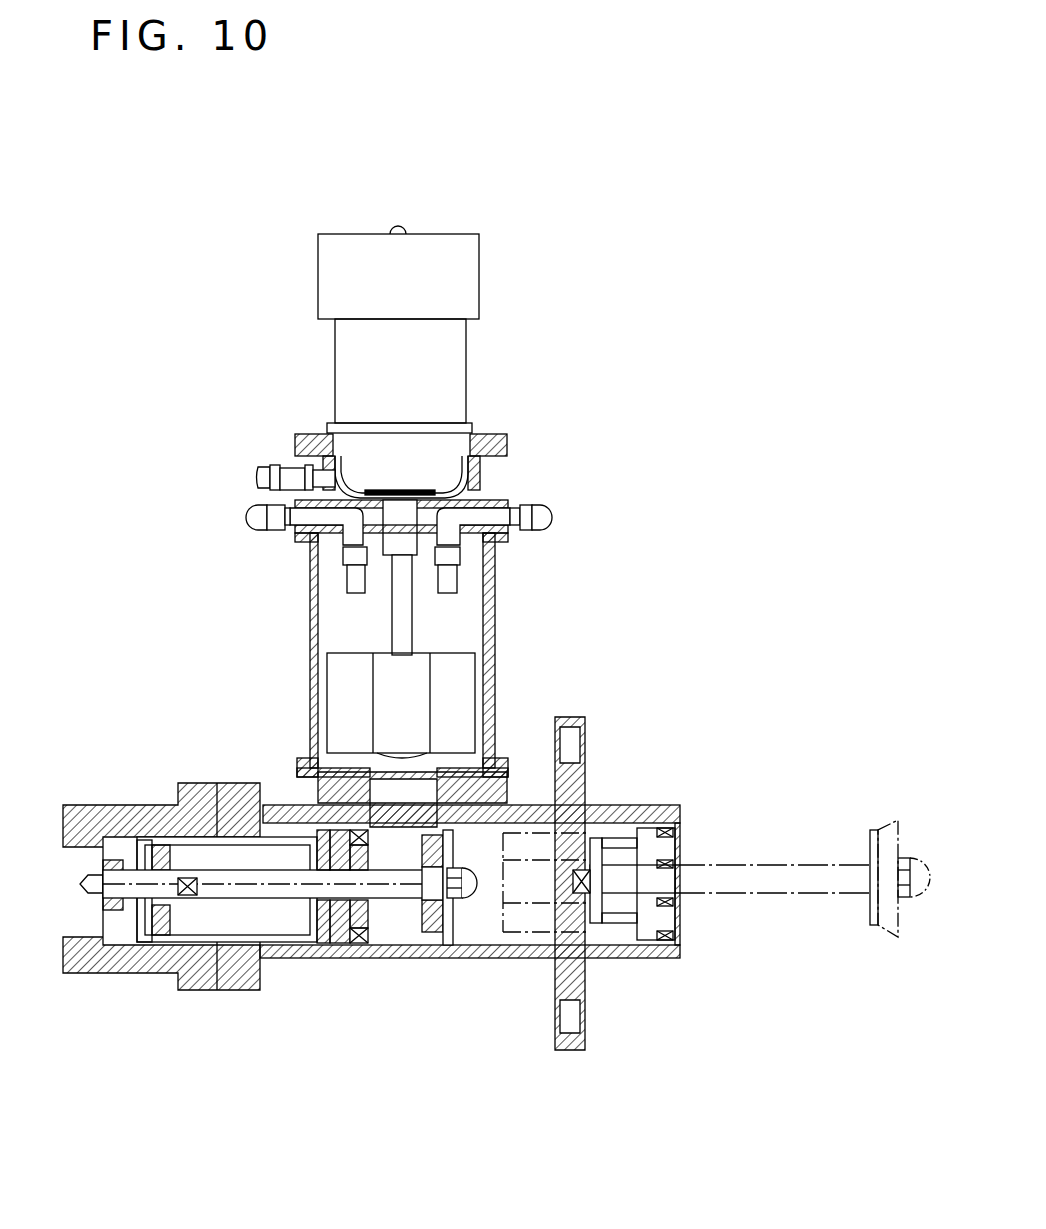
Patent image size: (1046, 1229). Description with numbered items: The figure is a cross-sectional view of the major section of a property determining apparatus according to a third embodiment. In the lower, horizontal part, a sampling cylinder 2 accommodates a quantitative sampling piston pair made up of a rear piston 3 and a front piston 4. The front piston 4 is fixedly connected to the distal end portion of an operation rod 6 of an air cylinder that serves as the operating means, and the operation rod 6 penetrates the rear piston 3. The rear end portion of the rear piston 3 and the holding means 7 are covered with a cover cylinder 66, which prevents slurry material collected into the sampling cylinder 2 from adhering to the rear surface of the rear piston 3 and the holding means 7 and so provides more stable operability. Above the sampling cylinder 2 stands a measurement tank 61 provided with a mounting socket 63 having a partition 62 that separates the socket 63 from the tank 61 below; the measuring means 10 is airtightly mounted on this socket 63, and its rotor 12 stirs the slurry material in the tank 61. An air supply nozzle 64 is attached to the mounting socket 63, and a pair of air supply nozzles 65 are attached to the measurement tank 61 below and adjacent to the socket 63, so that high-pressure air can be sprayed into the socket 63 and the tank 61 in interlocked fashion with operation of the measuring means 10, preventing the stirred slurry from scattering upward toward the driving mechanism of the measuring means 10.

The sampling cylinder 2 is at (507, 958).
The rear piston 3 is at (390, 957).
The front piston 4 is at (420, 957).
The operation rod 6 is at (270, 872).
The holding means 7 is at (183, 913).
The measuring means 10 is at (467, 350).
The rotor 12 is at (462, 677).
The measurement tank 61 is at (495, 607).
The partition 62 is at (473, 486).
The mounting socket 63 is at (480, 467).
The air supply nozzle 64 is at (282, 470).
The air supply nozzle 65 is at (258, 528).
The cover cylinder 66 is at (290, 942).